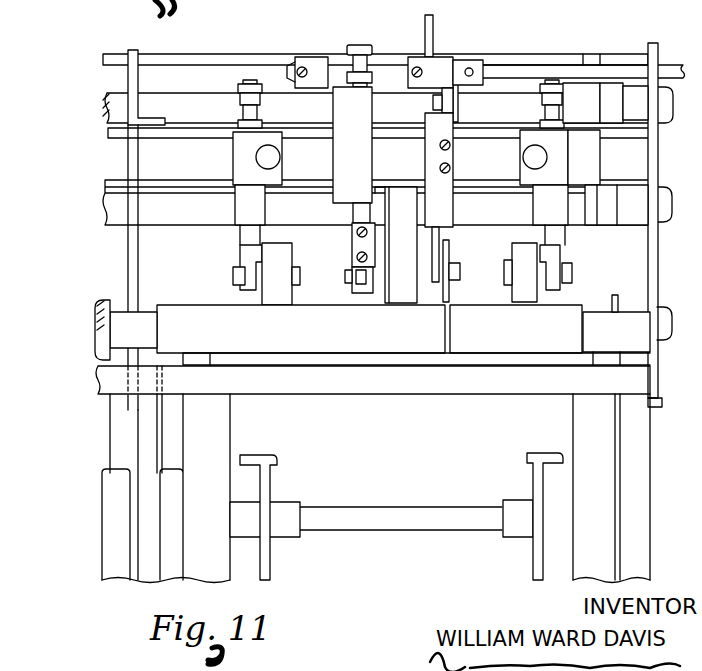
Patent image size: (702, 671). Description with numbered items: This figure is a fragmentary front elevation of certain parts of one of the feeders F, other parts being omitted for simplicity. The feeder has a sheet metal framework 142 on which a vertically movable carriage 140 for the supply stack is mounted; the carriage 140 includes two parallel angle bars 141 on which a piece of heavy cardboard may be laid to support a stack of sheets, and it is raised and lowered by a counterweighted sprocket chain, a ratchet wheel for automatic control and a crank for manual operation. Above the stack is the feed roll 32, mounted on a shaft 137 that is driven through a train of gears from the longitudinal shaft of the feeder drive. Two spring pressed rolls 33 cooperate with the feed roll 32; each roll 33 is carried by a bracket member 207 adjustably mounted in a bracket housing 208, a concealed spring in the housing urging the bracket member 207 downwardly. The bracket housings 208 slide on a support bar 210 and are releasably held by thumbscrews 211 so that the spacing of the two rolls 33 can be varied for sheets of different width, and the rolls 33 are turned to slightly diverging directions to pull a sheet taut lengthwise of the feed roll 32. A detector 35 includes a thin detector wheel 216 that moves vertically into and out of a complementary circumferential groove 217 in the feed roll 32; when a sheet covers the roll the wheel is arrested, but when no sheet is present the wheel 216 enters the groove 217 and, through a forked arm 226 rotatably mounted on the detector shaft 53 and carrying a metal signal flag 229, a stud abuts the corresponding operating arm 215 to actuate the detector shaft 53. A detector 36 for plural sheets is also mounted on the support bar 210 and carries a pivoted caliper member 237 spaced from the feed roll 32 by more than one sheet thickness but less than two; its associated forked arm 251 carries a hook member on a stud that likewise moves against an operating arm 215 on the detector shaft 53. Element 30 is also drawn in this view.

The detector shaft 53 is at (527, 72).
The support bar 210 is at (138, 153).
The feeder F is at (632, 43).
The operating arm 215 is at (328, 100).
The forked arm 251 is at (343, 85).
The metal signal flag 229 is at (435, 26).
The forked arm 226 is at (445, 78).
The thumbscrew 211 is at (279, 157).
The bracket housing 208 is at (557, 200).
The bracket member 207 is at (238, 246).
The spring pressed roll 33 is at (269, 250).
The detector 36 is at (346, 249).
The caliper member 237 is at (352, 292).
The vertical plate 30 is at (392, 285).
The detector 35 is at (441, 232).
The detector wheel 216 is at (449, 259).
The feed roll 32 is at (470, 306).
The circumferential groove 217 is at (450, 318).
The shaft 137 is at (605, 323).
The framework 142 is at (623, 445).
The carriage 140 is at (553, 442).
The angle bar 141 is at (258, 458).